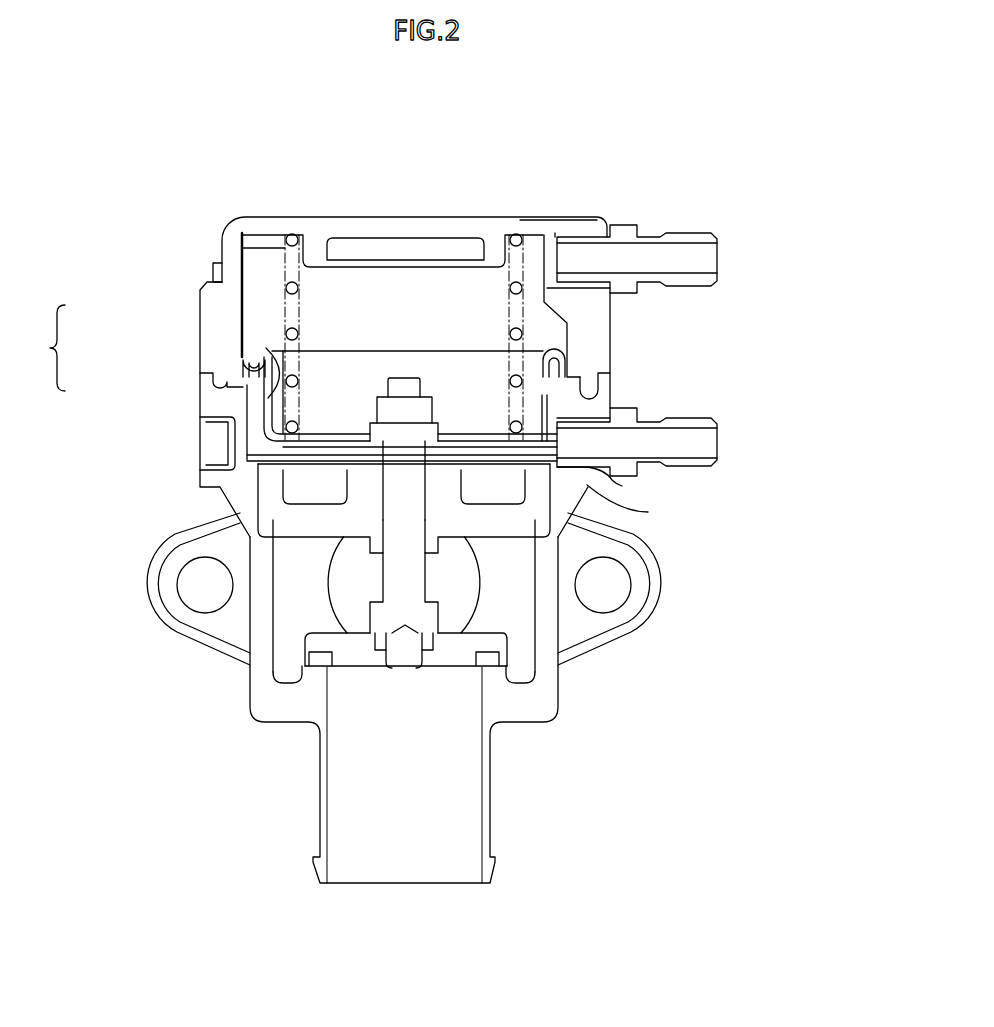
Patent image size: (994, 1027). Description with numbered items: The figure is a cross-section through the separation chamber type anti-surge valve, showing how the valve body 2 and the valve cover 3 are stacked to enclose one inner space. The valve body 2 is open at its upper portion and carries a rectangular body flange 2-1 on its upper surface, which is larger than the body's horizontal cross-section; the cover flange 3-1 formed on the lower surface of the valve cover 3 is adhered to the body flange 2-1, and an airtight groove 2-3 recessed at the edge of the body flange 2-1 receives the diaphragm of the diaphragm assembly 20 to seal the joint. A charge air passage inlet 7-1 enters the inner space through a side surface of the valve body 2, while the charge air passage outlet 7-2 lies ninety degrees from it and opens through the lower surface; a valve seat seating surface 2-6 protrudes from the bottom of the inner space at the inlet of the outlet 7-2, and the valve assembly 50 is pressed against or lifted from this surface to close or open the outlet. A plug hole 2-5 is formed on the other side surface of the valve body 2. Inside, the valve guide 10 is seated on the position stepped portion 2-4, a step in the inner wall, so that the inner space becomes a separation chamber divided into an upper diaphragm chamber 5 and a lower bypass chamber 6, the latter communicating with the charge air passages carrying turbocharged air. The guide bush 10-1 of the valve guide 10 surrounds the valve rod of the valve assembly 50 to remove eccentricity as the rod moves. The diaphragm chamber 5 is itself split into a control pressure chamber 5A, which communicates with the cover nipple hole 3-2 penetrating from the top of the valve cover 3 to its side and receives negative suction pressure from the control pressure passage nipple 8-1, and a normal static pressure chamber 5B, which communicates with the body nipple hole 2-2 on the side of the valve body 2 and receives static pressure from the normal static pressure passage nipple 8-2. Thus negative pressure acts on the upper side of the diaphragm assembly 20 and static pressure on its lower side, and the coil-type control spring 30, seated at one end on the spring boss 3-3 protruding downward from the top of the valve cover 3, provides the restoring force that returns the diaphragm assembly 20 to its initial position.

The valve body 2 is at (542, 705).
The body flange 2-1 is at (648, 512).
The body nipple hole 2-2 is at (622, 486).
The airtight groove 2-3 is at (597, 393).
The position stepped portion 2-4 is at (570, 518).
The plug hole 2-5 is at (213, 442).
The valve seat seating surface 2-6 is at (307, 665).
The valve cover 3 is at (373, 215).
The cover flange 3-1 is at (598, 360).
The cover nipple hole 3-2 is at (536, 225).
The spring boss 3-3 is at (486, 258).
The diaphragm chamber 5 is at (295, 409).
The control pressure chamber 5A is at (250, 338).
The normal static pressure chamber 5B is at (255, 417).
The bypass chamber 6 is at (505, 590).
The charge air passage inlet 7-1 is at (448, 605).
The charge air passage outlet 7-2 is at (450, 803).
The control pressure passage nipple 8-1 is at (708, 253).
The normal static pressure passage nipple 8-2 is at (707, 443).
The valve guide 10 is at (313, 522).
The guide bush 10-1 is at (373, 547).
The diaphragm assembly 20 is at (273, 347).
The control spring 30 is at (287, 330).
The valve assembly 50 is at (367, 653).